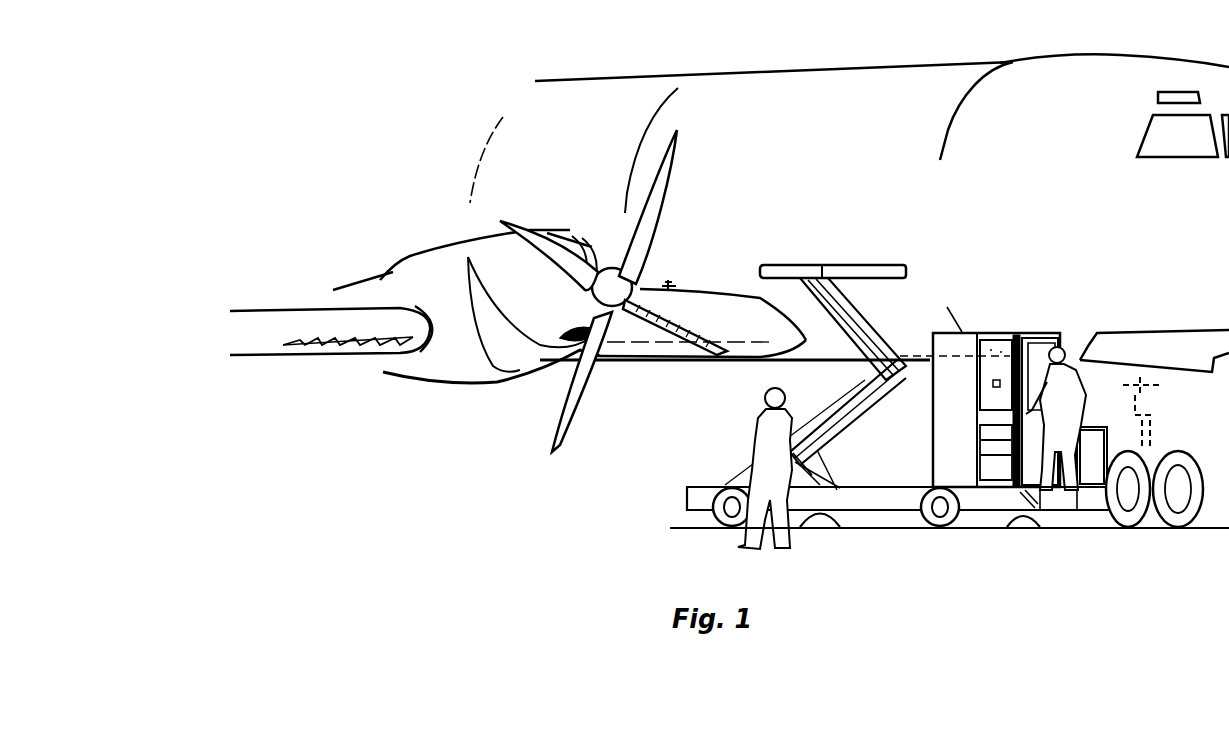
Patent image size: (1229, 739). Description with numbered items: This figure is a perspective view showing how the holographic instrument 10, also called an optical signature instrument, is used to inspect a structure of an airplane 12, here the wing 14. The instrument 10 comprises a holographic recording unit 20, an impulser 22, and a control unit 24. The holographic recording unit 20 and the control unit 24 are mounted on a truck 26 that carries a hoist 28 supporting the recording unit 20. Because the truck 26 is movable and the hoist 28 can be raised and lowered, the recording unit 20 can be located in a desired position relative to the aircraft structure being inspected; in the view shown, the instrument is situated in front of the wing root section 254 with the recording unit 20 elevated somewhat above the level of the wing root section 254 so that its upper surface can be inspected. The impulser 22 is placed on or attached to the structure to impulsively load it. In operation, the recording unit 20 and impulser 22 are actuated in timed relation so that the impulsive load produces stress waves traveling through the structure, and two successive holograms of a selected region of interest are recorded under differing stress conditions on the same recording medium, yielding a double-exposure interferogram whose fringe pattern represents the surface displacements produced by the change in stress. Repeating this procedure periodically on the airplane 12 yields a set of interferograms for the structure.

The holographic instrument 10 is at (984, 388).
The airplane 12 is at (862, 60).
The wing 14 is at (272, 311).
The holographic recording unit 20 is at (852, 258).
The impulser 22 is at (668, 272).
The control unit 24 is at (924, 438).
The truck 26 is at (676, 495).
The hoist 28 is at (868, 318).
The wing root section 254 is at (713, 292).